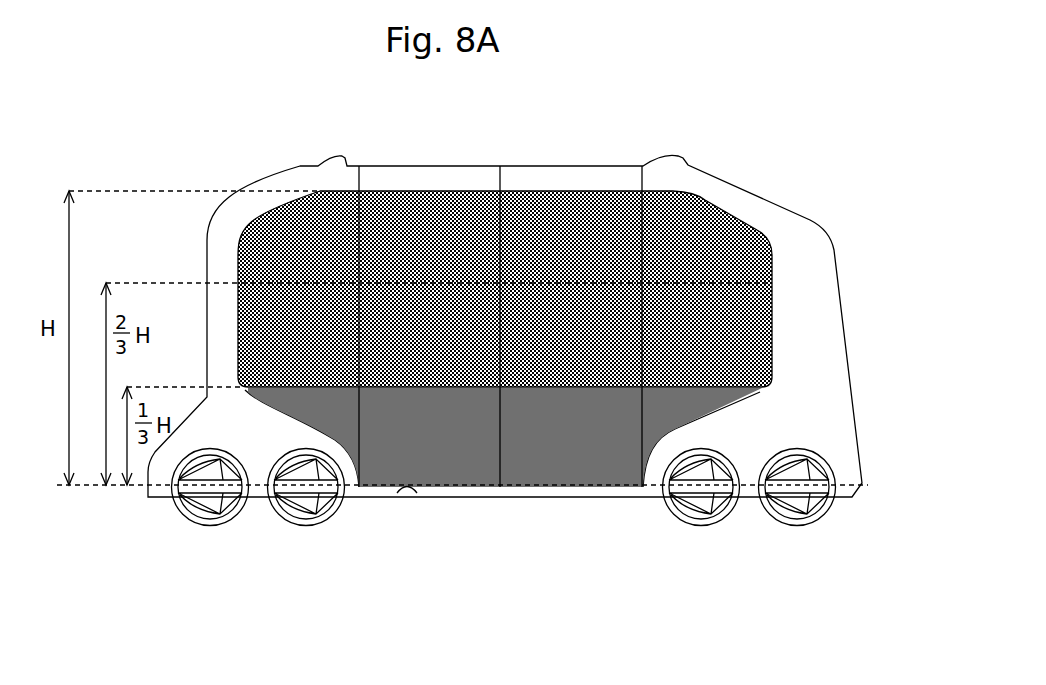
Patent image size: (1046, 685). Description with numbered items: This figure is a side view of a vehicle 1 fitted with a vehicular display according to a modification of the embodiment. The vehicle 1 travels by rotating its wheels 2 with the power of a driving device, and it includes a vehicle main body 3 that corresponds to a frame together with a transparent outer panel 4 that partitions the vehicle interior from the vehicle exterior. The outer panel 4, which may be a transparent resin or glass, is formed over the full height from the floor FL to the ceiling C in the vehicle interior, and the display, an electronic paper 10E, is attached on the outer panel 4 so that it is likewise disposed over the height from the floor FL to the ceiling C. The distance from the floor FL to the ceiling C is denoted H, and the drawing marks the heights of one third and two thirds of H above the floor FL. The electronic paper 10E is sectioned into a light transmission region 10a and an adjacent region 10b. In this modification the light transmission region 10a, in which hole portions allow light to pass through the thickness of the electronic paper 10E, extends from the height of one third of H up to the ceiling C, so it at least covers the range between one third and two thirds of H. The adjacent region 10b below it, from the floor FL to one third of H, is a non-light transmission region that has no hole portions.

The vehicle 1 is at (755, 111).
The wheels 2 is at (212, 525).
The vehicle main body 3 is at (743, 205).
The transparent outer panel 4 is at (570, 215).
The ceiling C is at (412, 198).
The light transmission region 10a is at (703, 355).
The adjacent region 10b is at (755, 397).
The electronic paper 10E is at (896, 326).
The floor FL is at (410, 496).